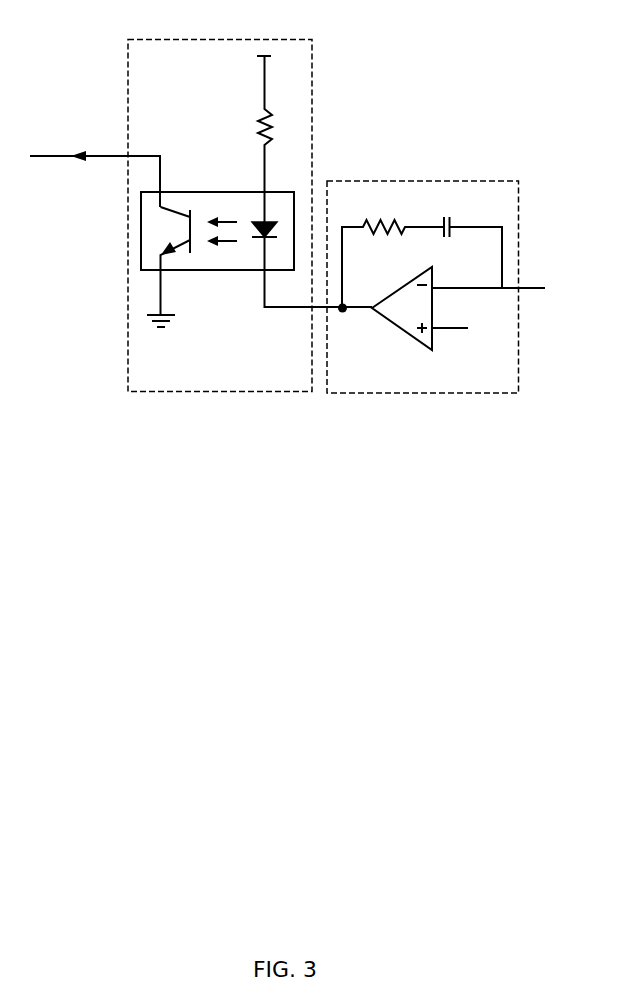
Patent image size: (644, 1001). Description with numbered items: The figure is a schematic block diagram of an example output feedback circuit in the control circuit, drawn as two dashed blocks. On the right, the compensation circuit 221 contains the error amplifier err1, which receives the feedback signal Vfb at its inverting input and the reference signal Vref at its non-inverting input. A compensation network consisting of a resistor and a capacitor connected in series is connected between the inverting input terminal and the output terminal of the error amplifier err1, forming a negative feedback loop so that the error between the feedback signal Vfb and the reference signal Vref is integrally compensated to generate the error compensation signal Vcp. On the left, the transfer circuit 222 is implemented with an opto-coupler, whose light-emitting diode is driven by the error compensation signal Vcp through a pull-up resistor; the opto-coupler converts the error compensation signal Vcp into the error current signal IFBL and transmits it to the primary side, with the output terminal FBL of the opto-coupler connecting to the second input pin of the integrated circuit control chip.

The compensation circuit 221 is at (457, 269).
The transfer circuit 222 is at (201, 197).
The output terminal FBL is at (217, 224).
The error amplifier err1 is at (402, 308).
The error compensation signal Vcp is at (312, 286).
The feedback signal Vfb is at (509, 292).
The reference signal Vref is at (470, 345).
The error current signal IFBL is at (95, 167).